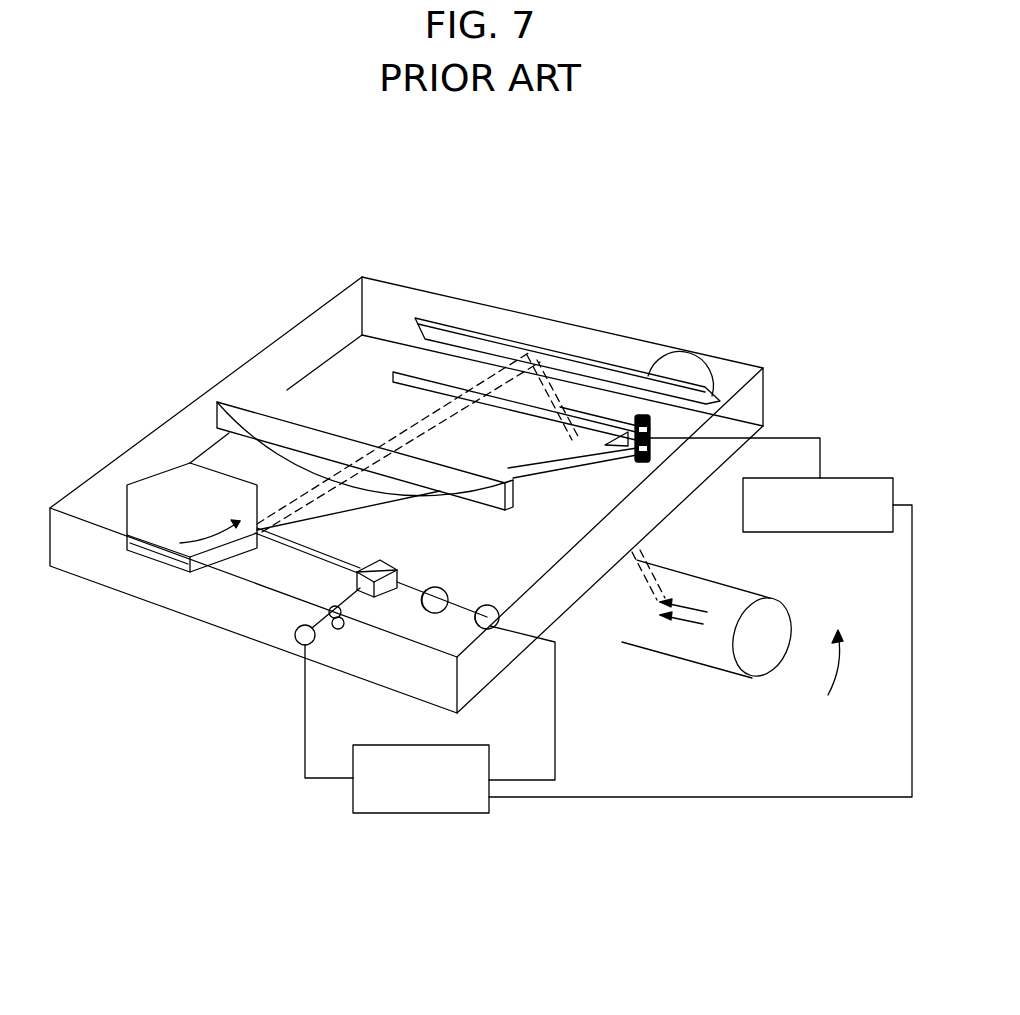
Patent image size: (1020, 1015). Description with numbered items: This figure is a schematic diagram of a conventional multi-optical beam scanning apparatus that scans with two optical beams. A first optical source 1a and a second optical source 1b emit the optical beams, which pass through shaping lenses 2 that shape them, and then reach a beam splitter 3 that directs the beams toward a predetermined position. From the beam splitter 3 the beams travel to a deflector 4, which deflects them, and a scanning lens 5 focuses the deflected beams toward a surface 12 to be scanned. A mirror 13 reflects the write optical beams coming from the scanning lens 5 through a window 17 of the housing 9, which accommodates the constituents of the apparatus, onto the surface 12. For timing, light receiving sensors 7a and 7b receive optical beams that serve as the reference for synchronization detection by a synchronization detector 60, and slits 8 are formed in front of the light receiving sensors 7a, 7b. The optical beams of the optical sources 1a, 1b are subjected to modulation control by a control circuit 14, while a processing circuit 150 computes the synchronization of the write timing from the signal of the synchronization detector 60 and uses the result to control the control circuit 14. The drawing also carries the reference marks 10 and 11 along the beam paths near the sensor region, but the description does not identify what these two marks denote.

The first optical source 1a is at (295, 643).
The second optical source 1b is at (487, 630).
The shaping lenses 2 is at (435, 613).
The beam splitter 3 is at (357, 580).
The deflector 4 is at (155, 490).
The scanning lens 5 is at (270, 405).
The light receiving sensor 7a is at (650, 415).
The light receiving sensor 7b is at (645, 464).
The slits 8 is at (733, 383).
The housing 9 is at (640, 353).
The reflected light beam 10 is at (575, 450).
The light beam 11 is at (547, 463).
The surface to be scanned 12 is at (733, 598).
The mirror 13 is at (438, 320).
The control circuit 14 is at (420, 814).
The window 17 is at (393, 376).
The synchronization detector 60 is at (727, 436).
The processing circuit 150 is at (872, 533).